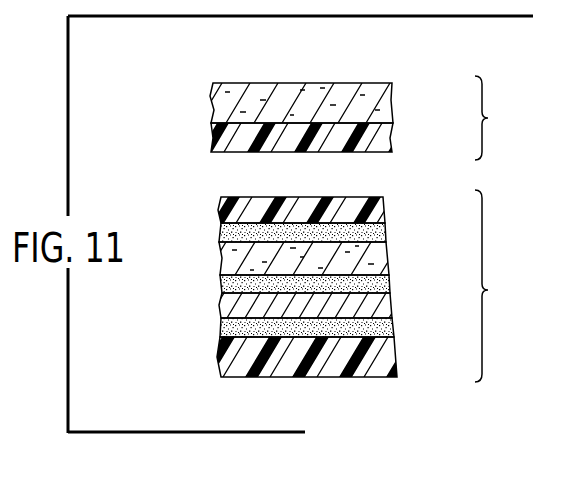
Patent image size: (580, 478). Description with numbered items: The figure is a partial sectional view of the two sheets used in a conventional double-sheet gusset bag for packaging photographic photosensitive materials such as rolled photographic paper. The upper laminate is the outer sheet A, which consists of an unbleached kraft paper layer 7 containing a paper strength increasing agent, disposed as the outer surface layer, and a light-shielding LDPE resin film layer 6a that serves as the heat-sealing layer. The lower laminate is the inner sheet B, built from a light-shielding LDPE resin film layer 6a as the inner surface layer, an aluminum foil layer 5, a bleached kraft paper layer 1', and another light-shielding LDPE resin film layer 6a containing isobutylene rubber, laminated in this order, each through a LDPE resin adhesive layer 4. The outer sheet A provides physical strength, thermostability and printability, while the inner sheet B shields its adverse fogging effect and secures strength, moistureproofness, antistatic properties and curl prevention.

The unbleached kraft paper layer 7 is at (394, 107).
The light-shielding LDPE resin film layer 6a is at (393, 139).
The LDPE resin adhesive layer 4 is at (220, 230).
The bleached kraft paper layer 1' is at (334, 258).
The aluminum foil layer 5 is at (390, 308).
The outer sheet A is at (494, 118).
The inner sheet B is at (494, 286).